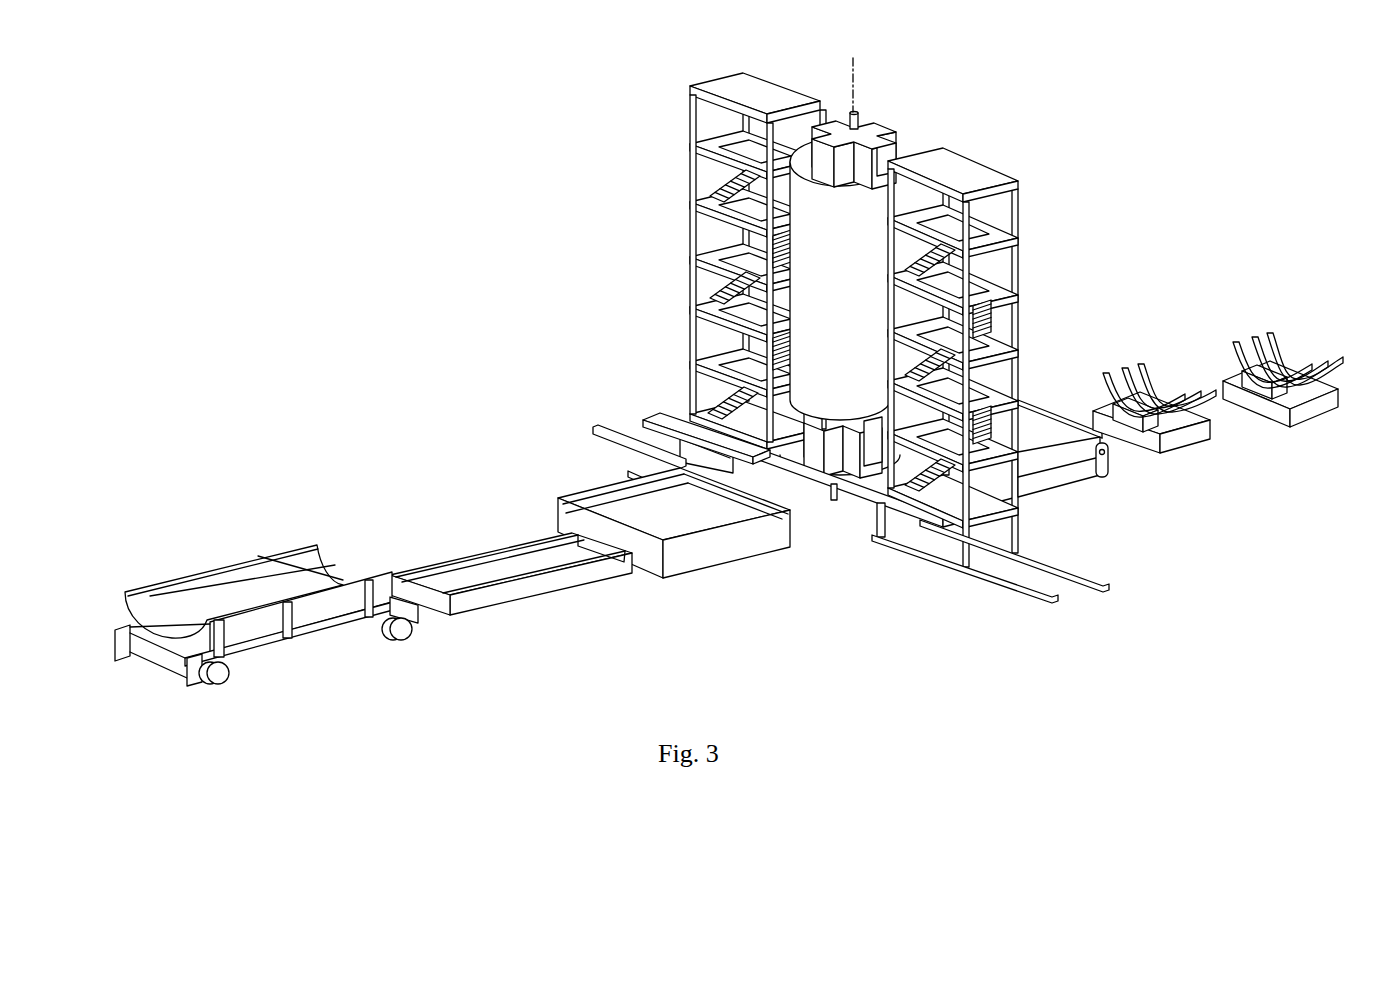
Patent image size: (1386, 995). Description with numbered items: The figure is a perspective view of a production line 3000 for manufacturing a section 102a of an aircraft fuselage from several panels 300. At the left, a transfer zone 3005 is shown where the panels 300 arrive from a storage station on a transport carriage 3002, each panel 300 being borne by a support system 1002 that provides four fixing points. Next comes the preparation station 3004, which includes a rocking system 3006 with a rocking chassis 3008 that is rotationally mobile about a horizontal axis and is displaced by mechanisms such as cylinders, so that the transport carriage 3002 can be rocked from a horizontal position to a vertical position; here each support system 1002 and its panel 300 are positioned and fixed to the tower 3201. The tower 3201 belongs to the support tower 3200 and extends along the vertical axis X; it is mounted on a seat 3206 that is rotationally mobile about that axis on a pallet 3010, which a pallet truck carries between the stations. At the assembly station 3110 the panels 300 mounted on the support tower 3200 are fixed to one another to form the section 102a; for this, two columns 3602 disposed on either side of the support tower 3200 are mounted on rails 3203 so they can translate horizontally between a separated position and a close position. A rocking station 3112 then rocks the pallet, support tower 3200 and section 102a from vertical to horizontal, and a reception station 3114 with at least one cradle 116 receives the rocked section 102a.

The production line 3000 is at (484, 246).
The support tower 3200 is at (1093, 84).
The tower 3201 is at (877, 121).
The column 3602 is at (1018, 206).
The section 102a is at (882, 344).
The seat 3206 is at (645, 420).
The pallet 3010 is at (833, 493).
The rails 3203 is at (982, 578).
The assembly station 3110 is at (1045, 630).
The rocking station 3112 is at (1171, 555).
The reception station 3114 is at (1280, 526).
The cradle 116 is at (1223, 484).
The panel 300 is at (200, 582).
The support system 1002 is at (280, 577).
The transport carriage 3002 is at (333, 643).
The transfer zone 3005 is at (402, 679).
The rocking chassis 3008 is at (460, 560).
The rocking system 3006 is at (565, 622).
The preparation station 3004 is at (746, 598).